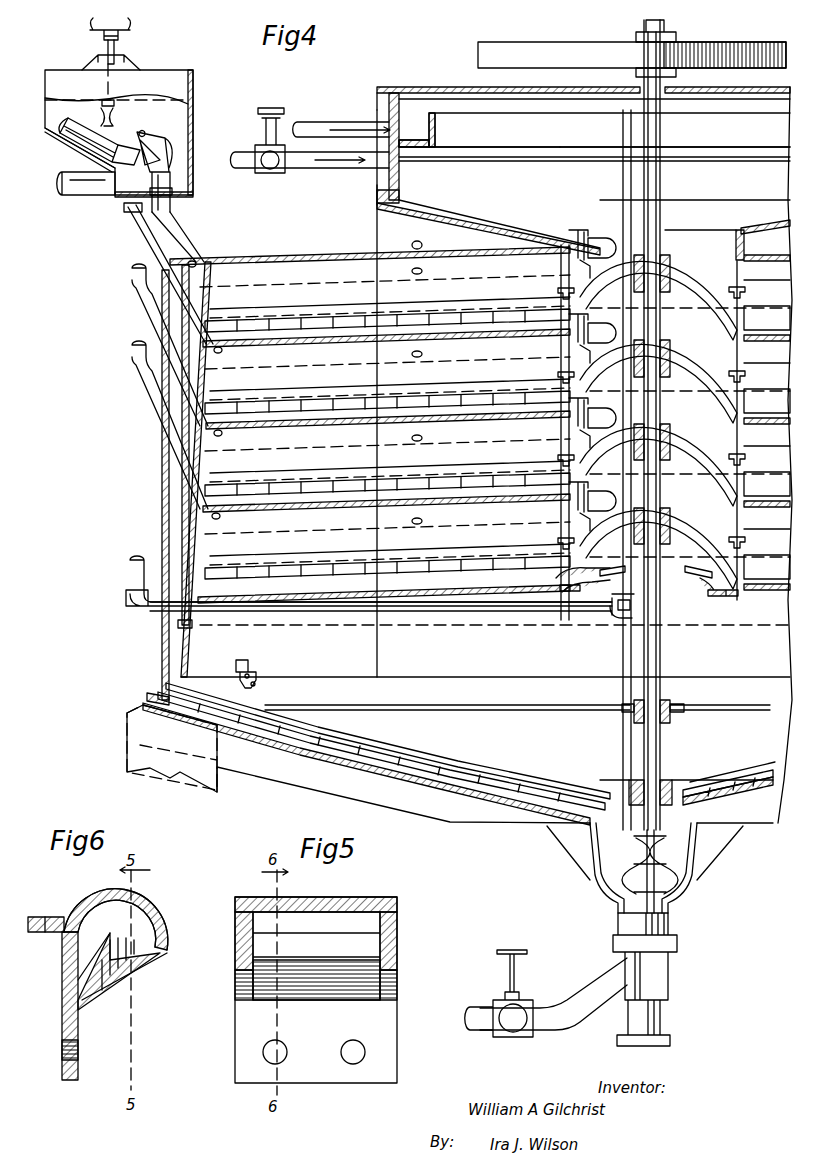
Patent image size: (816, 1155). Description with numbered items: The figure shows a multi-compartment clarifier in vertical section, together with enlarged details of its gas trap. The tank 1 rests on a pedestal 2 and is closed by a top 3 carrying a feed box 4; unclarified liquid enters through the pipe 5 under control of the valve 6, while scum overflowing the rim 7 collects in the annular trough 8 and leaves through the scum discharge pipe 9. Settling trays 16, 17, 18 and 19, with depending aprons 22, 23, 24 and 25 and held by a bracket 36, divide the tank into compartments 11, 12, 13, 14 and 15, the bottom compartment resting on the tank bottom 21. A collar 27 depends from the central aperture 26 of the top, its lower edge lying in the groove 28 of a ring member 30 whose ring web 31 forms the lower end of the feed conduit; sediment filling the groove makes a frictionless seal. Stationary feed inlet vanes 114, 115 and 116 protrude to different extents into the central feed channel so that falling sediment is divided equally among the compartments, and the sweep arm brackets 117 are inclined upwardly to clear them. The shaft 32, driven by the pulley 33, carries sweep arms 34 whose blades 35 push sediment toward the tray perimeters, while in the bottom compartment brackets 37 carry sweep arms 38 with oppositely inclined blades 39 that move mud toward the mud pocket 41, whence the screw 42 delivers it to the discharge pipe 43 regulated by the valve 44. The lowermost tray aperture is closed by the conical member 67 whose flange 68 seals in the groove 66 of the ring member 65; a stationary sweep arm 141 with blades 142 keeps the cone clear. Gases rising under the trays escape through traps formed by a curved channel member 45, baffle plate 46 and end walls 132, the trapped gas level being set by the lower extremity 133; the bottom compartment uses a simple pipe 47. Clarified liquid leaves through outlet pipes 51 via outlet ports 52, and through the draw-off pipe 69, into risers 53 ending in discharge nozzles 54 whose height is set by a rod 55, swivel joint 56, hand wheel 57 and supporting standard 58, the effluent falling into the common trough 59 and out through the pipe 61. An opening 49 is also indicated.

In FIG. 4, the tank 1 is at (160, 644).
In FIG. 4, the pedestal 2 is at (140, 748).
In FIG. 4, the top 3 is at (330, 256).
In FIG. 4, the feed box 4 is at (386, 210).
In FIG. 4, the pipe 5 is at (322, 168).
In FIG. 4, the valve 6 is at (266, 173).
In FIG. 4, the overflow rim 7 is at (445, 118).
In FIG. 4, the annular trough 8 is at (412, 118).
In FIG. 4, the scum discharge pipe 9 is at (325, 122).
In FIG. 4, the compartment 11 is at (495, 289).
In FIG. 4, the compartment 12 is at (497, 368).
In FIG. 4, the compartment 13 is at (497, 451).
In FIG. 4, the compartment 14 is at (497, 535).
In FIG. 4, the bottom compartment 15 is at (495, 636).
In FIG. 4, the settling tray 16 is at (348, 372).
In FIG. 4, the settling tray 17 is at (338, 456).
In FIG. 4, the settling tray 18 is at (321, 540).
In FIG. 4, the settling tray 19 is at (322, 610).
In FIG. 4, the bottom 21 is at (430, 775).
In FIG. 4, the depending apron 22 is at (198, 372).
In FIG. 4, the depending apron 23 is at (196, 456).
In FIG. 4, the depending apron 24 is at (196, 540).
In FIG. 4, the depending apron 25 is at (192, 630).
In FIG. 4, the central aperture 26 is at (690, 240).
In FIG. 4, the depending collar 27 is at (562, 279).
In FIG. 4, the groove 28 is at (745, 290).
In FIG. 4, the ring member 30 is at (560, 372).
In FIG. 4, the ring web 31 is at (562, 462).
In FIG. 4, the shaft 32 is at (660, 655).
In FIG. 4, the pulley 33 is at (556, 50).
In FIG. 4, the sweep arm 34 is at (346, 307).
In FIG. 4, the blades 35 is at (480, 316).
In FIG. 4, the bracket 36 is at (256, 686).
In FIG. 4, the bracket 37 is at (580, 783).
In FIG. 4, the sweep arm 38 is at (490, 778).
In FIG. 4, the blades 39 is at (330, 746).
In FIG. 4, the mud pocket 41 is at (692, 880).
In FIG. 4, the screw 42 is at (660, 850).
In FIG. 4, the discharge pipe 43 is at (592, 992).
In FIG. 4, the valve 44 is at (522, 996).
In FIG. 4, the channel member 45 is at (590, 238).
In FIG. 5, the channel member 45 is at (340, 910).
In FIG. 6, the channel member 45 is at (158, 912).
In FIG. 4, the baffle plate 46 is at (576, 260).
In FIG. 5, the baffle plate 46 is at (382, 985).
In FIG. 6, the baffle plate 46 is at (92, 980).
In FIG. 4, the pipe 47 is at (623, 184).
In FIG. 4, the opening 49 is at (266, 455).
In FIG. 4, the clarified liquid outlet pipe 51 is at (188, 240).
In FIG. 4, the outlet port 52 is at (412, 522).
In FIG. 4, the riser 53 is at (130, 276).
In FIG. 4, the discharge nozzle 54 is at (60, 136).
In FIG. 4, the rod 55 is at (115, 78).
In FIG. 4, the swivel joint 56 is at (130, 100).
In FIG. 4, the hand wheel 57 is at (120, 28).
In FIG. 4, the supporting standard 58 is at (118, 56).
In FIG. 4, the common trough 59 is at (85, 152).
In FIG. 4, the pipe 61 is at (85, 192).
In FIG. 4, the ring member 65 is at (568, 590).
In FIG. 4, the groove 66 is at (580, 585).
In FIG. 4, the conical member 67 is at (592, 582).
In FIG. 4, the depending flange 68 is at (726, 600).
In FIG. 4, the draw-off pipe 69 is at (381, 622).
In FIG. 4, the stationary feed inlet vane 114 is at (596, 304).
In FIG. 4, the stationary feed inlet vane 115 is at (596, 388).
In FIG. 4, the stationary feed inlet vane 116 is at (596, 470).
In FIG. 4, the sweep arm bracket 117 is at (700, 290).
In FIG. 5, the end wall 132 is at (235, 935).
In FIG. 6, the end wall 132 is at (136, 964).
In FIG. 6, the lower extremity 133 is at (166, 948).
In FIG. 4, the stationary sweep arm 141 is at (545, 580).
In FIG. 4, the blades 142 is at (612, 580).